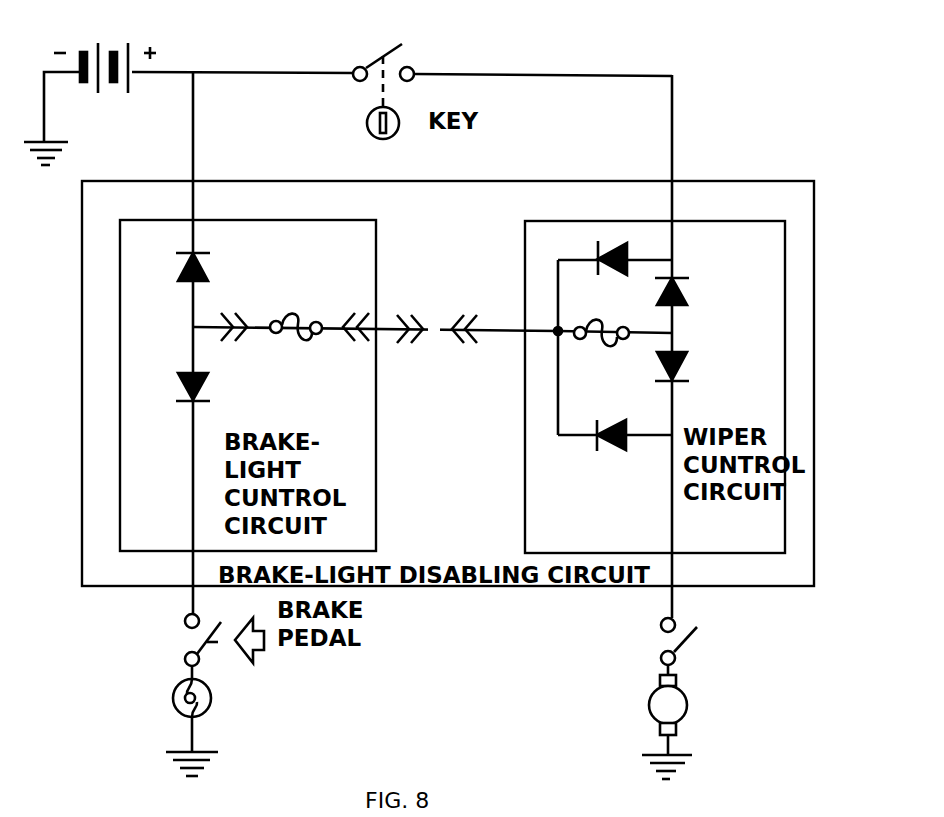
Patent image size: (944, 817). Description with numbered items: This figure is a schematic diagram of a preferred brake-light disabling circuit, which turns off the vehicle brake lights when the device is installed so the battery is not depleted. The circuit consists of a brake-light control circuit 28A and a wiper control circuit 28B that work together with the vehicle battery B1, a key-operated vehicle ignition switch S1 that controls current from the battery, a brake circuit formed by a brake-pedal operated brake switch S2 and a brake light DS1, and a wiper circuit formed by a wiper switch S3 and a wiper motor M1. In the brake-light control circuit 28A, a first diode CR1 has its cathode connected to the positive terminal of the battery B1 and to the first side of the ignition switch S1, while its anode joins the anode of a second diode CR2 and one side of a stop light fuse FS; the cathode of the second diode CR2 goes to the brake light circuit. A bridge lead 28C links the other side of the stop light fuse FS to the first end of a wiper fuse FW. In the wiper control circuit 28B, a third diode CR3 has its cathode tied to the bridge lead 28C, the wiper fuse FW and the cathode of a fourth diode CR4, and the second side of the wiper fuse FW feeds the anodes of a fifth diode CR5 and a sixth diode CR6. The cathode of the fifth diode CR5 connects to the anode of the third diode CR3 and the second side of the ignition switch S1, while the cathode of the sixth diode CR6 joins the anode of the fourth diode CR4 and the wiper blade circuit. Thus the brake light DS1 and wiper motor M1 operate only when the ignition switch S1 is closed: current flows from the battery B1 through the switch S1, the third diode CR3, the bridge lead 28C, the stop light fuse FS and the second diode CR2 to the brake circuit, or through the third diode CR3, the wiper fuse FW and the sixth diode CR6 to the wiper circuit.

The vehicle battery B1 is at (90, 83).
The key-operated vehicle ignition switch S1 is at (383, 71).
The brake-light control circuit 28A is at (248, 385).
The wiper control circuit 28B is at (655, 387).
The bridge lead 28C is at (432, 331).
The first diode CR1 is at (231, 267).
The second diode CR2 is at (229, 385).
The third diode CR3 is at (587, 250).
The fourth diode CR4 is at (626, 451).
The fifth diode CR5 is at (705, 291).
The sixth diode CR6 is at (704, 366).
The stop light fuse FS is at (295, 342).
The wiper fuse FW is at (591, 347).
The brake-pedal operated brake switch S2 is at (174, 640).
The wiper switch S3 is at (700, 641).
The brake light DS1 is at (205, 707).
The wiper motor M1 is at (681, 715).